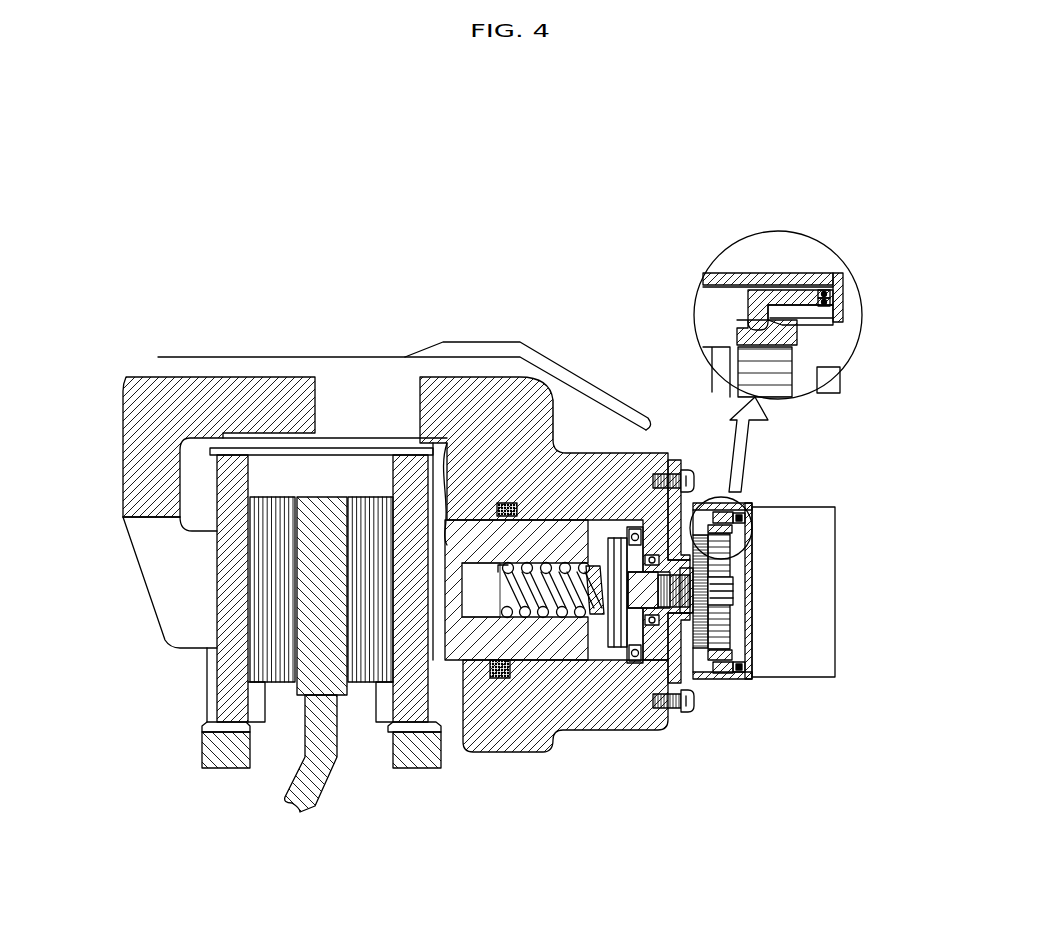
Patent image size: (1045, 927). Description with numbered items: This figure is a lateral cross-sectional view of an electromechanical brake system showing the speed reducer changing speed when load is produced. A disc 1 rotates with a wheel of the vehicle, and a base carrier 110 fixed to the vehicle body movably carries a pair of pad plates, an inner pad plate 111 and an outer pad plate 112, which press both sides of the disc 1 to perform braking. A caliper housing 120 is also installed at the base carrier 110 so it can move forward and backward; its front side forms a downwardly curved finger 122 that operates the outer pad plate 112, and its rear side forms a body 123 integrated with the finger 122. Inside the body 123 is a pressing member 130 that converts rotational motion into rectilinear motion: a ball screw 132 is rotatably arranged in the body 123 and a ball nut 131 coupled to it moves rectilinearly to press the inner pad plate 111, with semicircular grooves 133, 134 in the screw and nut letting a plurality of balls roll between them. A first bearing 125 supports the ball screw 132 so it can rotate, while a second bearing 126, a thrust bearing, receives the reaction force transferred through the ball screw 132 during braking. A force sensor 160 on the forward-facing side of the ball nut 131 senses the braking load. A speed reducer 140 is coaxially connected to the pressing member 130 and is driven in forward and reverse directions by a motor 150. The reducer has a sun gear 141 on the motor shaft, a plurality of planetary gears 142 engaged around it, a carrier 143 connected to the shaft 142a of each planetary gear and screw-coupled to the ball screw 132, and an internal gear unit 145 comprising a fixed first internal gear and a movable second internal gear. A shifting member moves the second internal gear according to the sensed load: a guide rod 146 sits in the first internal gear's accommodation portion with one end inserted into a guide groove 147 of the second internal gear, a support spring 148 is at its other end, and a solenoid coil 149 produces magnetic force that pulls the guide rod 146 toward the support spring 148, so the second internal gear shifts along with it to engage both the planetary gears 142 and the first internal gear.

The disc 1 is at (303, 777).
The base carrier 110 is at (417, 763).
The inner pad plate 111 is at (396, 707).
The outer pad plate 112 is at (232, 693).
The caliper housing 120 is at (586, 368).
The finger 122 is at (153, 598).
The body 123 is at (600, 455).
The first bearing 125 is at (690, 525).
The second bearing 126 is at (660, 465).
The pressing member 130 is at (473, 800).
The ball nut 131 is at (477, 648).
The ball screw 132 is at (552, 598).
The groove 133 is at (592, 620).
The groove 134 is at (602, 605).
The speed reducer 140 is at (735, 543).
The sun gear 141 is at (735, 592).
The planetary gears 142 is at (726, 668).
The shaft 142a is at (740, 672).
The carrier 143 is at (692, 685).
The internal gear unit 145 is at (746, 686).
The guide rod 146 is at (765, 292).
The guide groove 147 is at (748, 307).
The support spring 148 is at (818, 288).
The solenoid coil 149 is at (831, 288).
The motor 150 is at (820, 508).
The force sensor 160 is at (447, 528).